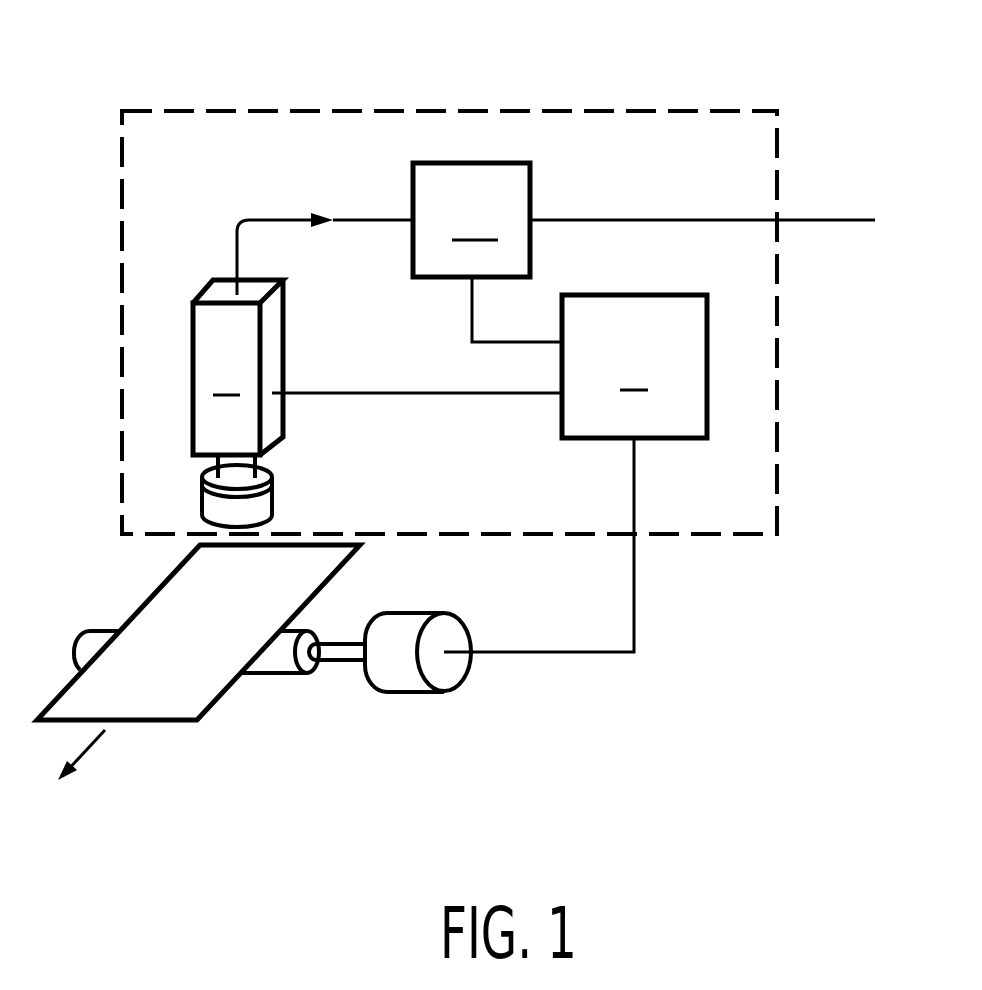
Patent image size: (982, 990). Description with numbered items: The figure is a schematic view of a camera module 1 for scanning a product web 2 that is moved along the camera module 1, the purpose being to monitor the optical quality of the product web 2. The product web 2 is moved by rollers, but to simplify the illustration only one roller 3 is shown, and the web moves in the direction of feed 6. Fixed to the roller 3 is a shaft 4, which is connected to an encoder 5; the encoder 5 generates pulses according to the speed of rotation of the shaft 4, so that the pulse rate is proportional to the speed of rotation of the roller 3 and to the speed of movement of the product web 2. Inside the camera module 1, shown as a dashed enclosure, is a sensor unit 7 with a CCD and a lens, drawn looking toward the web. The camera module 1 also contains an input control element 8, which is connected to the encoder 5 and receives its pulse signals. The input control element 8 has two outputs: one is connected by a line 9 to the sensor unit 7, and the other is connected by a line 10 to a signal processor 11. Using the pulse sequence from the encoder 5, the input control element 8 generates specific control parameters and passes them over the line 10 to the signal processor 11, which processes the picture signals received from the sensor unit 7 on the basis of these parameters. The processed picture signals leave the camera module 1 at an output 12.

The camera module 1 is at (380, 110).
The product web 2 is at (167, 597).
The roller 3 is at (277, 663).
The shaft 4 is at (345, 647).
The encoder 5 is at (453, 625).
The direction of feed 6 is at (92, 748).
The sensor unit 7 is at (303, 370).
The input control element 8 is at (634, 366).
The line 9 is at (410, 394).
The line 10 is at (470, 323).
The signal processor 11 is at (471, 220).
The output 12 is at (838, 220).